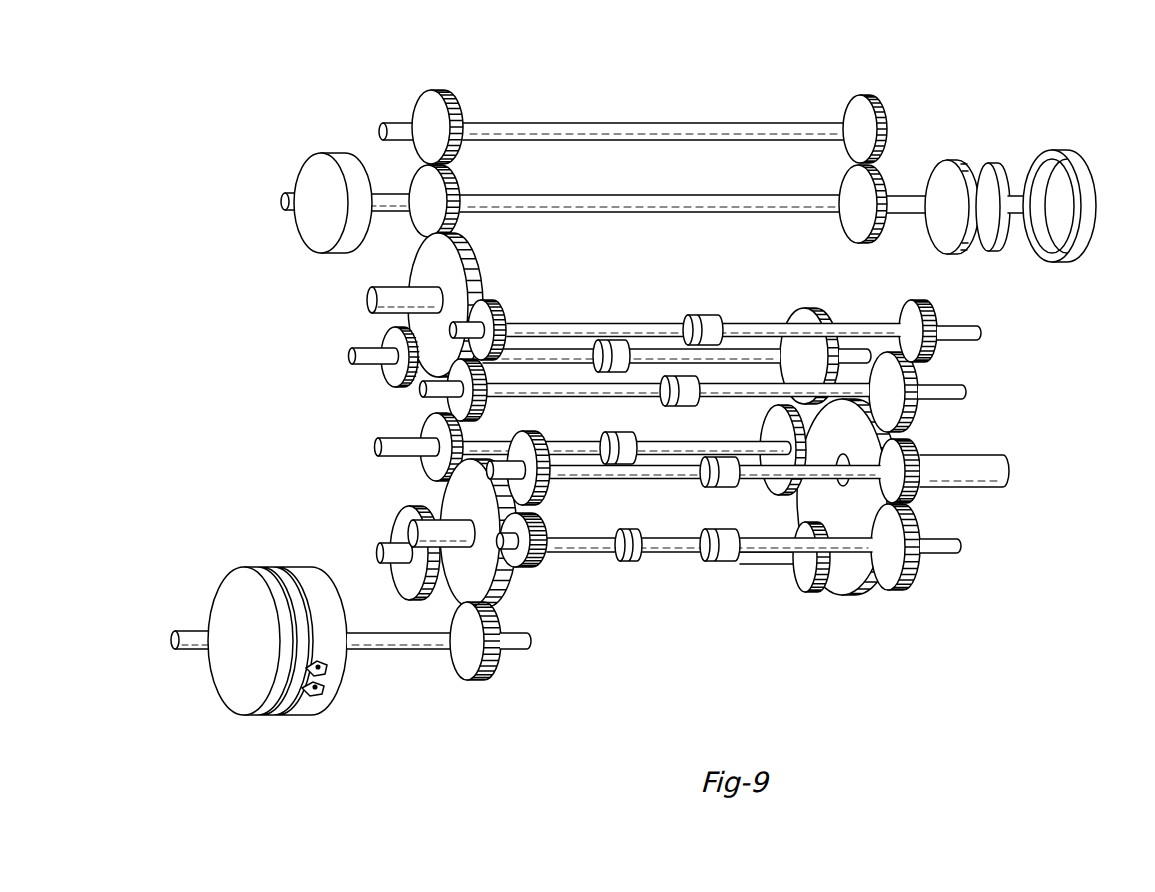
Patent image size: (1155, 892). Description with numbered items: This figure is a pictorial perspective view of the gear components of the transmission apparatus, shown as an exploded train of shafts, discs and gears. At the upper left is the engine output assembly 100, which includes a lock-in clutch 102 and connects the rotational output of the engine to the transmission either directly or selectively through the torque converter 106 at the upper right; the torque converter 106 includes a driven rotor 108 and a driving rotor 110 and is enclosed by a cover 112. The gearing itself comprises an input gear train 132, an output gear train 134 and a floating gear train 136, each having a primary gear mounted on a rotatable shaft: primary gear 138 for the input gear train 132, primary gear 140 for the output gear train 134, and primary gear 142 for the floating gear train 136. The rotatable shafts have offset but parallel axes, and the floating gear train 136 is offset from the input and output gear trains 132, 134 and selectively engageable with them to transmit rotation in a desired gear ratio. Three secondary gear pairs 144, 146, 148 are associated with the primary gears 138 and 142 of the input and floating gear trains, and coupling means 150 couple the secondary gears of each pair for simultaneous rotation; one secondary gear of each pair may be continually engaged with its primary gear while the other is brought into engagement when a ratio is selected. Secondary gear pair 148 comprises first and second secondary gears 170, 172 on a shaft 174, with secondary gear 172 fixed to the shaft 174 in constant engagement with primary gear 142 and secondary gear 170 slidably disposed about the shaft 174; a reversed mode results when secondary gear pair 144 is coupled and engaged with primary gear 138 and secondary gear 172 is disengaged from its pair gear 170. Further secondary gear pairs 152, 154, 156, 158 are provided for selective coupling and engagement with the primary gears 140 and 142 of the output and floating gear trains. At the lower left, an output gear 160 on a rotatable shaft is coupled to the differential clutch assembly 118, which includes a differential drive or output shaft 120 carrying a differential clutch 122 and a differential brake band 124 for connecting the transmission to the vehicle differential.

The engine output assembly 100 is at (600, 127).
The lock-in clutch 102 is at (301, 221).
The torque converter 106 is at (1040, 209).
The driven rotor 108 is at (970, 235).
The driving rotor 110 is at (1022, 226).
The cover 112 is at (1089, 217).
The differential clutch assembly 118 is at (342, 657).
The differential drive or output shaft 120 is at (198, 616).
The differential clutch 122 is at (276, 622).
The differential brake band 124 is at (358, 686).
The input gear train 132 is at (444, 307).
The output gear train 134 is at (574, 528).
The floating gear train 136 is at (952, 488).
The primary gear 138 is at (403, 305).
The primary gear 140 is at (432, 533).
The primary gear 142 is at (848, 512).
The secondary gear pair 144 is at (744, 319).
The secondary gear pair 146 is at (677, 314).
The secondary gear pair 148 is at (710, 438).
The coupling means 150 is at (699, 436).
The secondary gear pair 152 is at (520, 452).
The secondary gear pair 154 is at (606, 409).
The secondary gear pair 156 is at (754, 598).
The secondary gear pair 158 is at (756, 588).
The output gear 160 is at (490, 671).
The secondary gear 170 is at (387, 390).
The secondary gear 172 is at (944, 392).
The shaft 174 is at (989, 382).